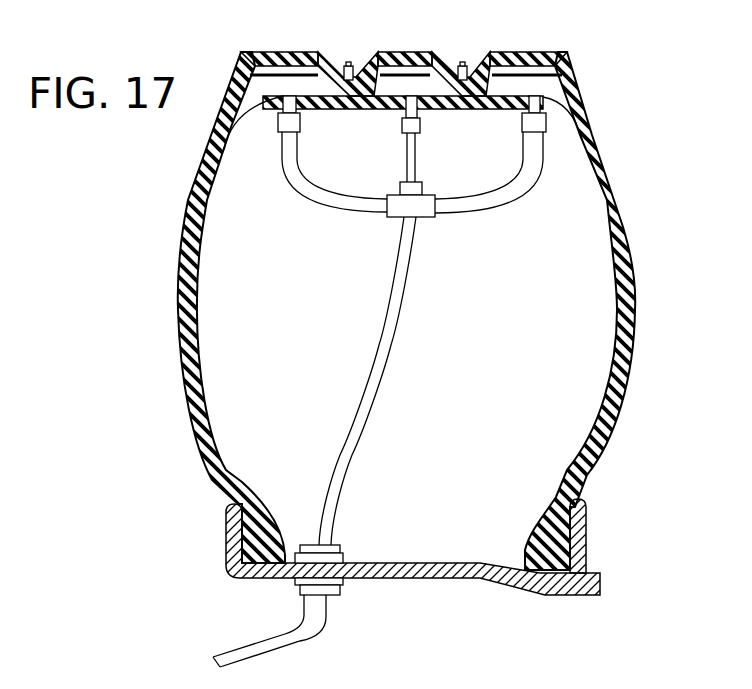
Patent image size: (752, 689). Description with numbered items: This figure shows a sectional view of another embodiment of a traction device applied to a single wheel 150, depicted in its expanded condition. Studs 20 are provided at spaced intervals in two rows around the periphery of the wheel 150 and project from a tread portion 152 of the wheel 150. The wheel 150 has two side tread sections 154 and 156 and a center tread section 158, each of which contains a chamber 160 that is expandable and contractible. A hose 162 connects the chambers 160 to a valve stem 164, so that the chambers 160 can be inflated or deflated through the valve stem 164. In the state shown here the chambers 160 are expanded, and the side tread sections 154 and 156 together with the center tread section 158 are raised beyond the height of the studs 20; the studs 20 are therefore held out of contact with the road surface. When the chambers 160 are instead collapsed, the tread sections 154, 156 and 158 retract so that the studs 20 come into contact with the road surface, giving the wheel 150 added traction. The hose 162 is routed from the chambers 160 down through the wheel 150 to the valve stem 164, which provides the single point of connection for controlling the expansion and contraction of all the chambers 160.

The wheel 150 is at (628, 257).
The tread portion 152 is at (341, 107).
The side tread section 154 is at (273, 55).
The side tread section 156 is at (540, 55).
The center tread section 158 is at (400, 55).
The stud 20 is at (348, 62).
The chamber 160 is at (259, 96).
The hose 162 is at (397, 328).
The valve stem 164 is at (263, 638).